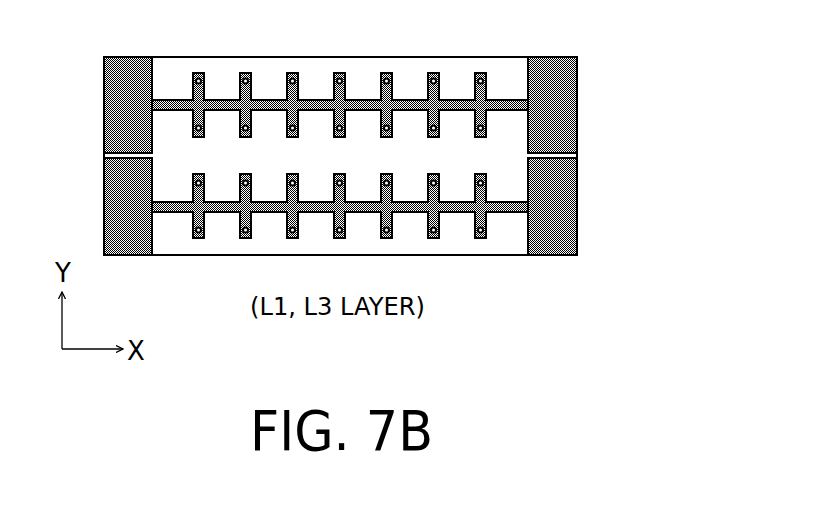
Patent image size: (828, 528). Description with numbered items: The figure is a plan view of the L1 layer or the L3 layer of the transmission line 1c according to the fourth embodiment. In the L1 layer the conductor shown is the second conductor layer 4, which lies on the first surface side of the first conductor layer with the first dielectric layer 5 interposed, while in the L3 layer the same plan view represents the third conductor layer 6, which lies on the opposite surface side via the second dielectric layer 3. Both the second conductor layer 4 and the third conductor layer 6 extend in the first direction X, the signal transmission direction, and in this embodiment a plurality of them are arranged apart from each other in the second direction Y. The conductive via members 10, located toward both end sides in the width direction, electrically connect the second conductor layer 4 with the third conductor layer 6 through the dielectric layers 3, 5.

The transmission line 1c is at (385, 181).
The second dielectric layer 3 is at (340, 121).
The first dielectric layer 5 is at (340, 121).
The conductive via member 10 is at (480, 78).
The second conductor layer 4 is at (385, 158).
The third conductor layer 6 is at (577, 155).